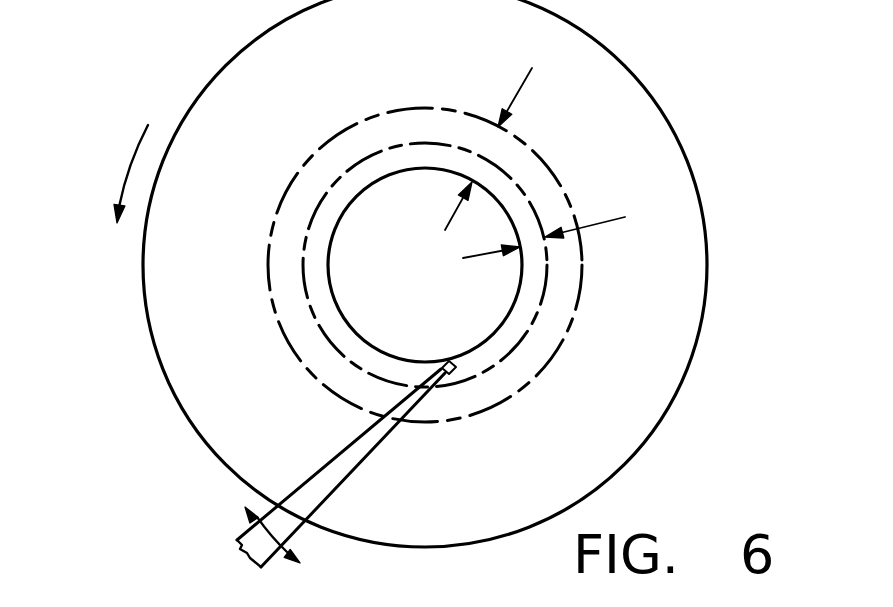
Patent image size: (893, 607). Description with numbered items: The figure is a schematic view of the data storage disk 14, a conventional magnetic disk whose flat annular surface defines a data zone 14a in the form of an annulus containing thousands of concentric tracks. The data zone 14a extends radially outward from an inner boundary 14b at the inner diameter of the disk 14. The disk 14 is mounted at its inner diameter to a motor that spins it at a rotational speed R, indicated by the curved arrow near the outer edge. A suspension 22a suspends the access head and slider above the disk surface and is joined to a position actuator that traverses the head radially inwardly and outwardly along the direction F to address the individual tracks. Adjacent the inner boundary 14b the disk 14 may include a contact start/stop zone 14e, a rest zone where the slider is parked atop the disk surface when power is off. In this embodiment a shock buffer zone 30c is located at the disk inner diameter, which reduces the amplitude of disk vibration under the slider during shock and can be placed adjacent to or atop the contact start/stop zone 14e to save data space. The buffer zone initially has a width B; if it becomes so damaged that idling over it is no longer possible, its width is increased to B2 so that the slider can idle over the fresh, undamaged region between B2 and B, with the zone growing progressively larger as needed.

The disk 14 is at (660, 91).
The data zone 14a is at (283, 140).
The contact start/stop zone 14e is at (448, 160).
The shock buffer zone 30c is at (305, 287).
The inner boundary 14b is at (515, 305).
The suspension 22a is at (347, 478).
The increased shock buffer zone width B2 is at (520, 90).
The shock buffer zone width B is at (600, 224).
The rotational speed R is at (136, 155).
The direction of head traversal F is at (248, 547).